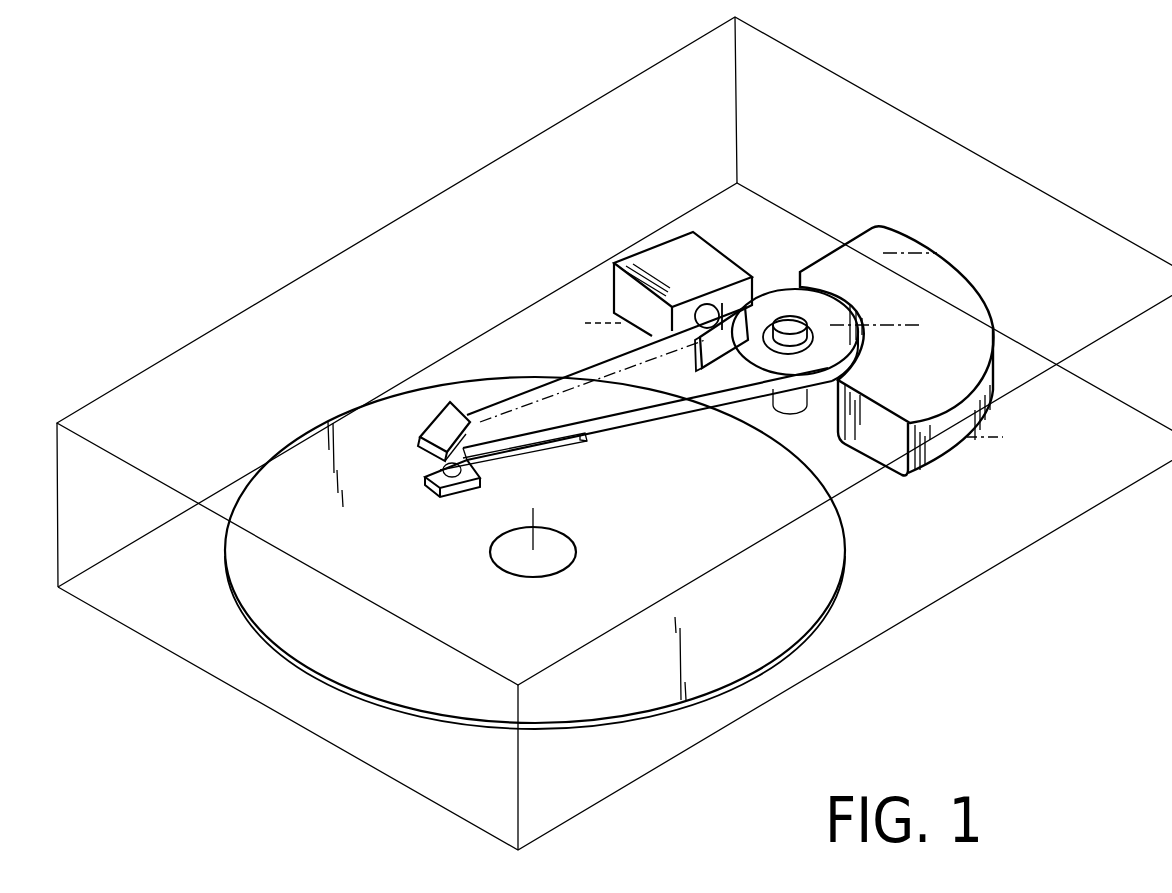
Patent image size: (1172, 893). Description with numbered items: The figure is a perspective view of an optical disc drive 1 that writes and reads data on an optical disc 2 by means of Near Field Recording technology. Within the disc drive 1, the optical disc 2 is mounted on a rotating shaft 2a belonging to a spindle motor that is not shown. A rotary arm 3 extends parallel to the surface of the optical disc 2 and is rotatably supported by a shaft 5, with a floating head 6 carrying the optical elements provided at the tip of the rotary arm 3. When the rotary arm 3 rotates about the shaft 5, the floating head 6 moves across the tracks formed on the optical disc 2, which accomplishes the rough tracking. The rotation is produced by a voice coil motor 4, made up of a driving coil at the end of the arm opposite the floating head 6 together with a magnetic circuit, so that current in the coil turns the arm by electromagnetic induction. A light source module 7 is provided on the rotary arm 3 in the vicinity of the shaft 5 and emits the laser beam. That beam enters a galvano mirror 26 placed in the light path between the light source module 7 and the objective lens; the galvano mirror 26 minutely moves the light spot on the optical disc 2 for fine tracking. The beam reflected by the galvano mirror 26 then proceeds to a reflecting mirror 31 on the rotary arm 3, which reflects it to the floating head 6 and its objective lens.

The optical disc drive 1 is at (355, 221).
The optical disc 2 is at (815, 578).
The rotating shaft 2a is at (577, 550).
The rotary arm 3 is at (607, 357).
The voice coil motor 4 is at (950, 285).
The shaft 5 is at (782, 317).
The floating head 6 is at (425, 481).
The light source module 7 is at (655, 262).
The galvano mirror 26 is at (716, 352).
The reflecting mirror 31 is at (447, 418).